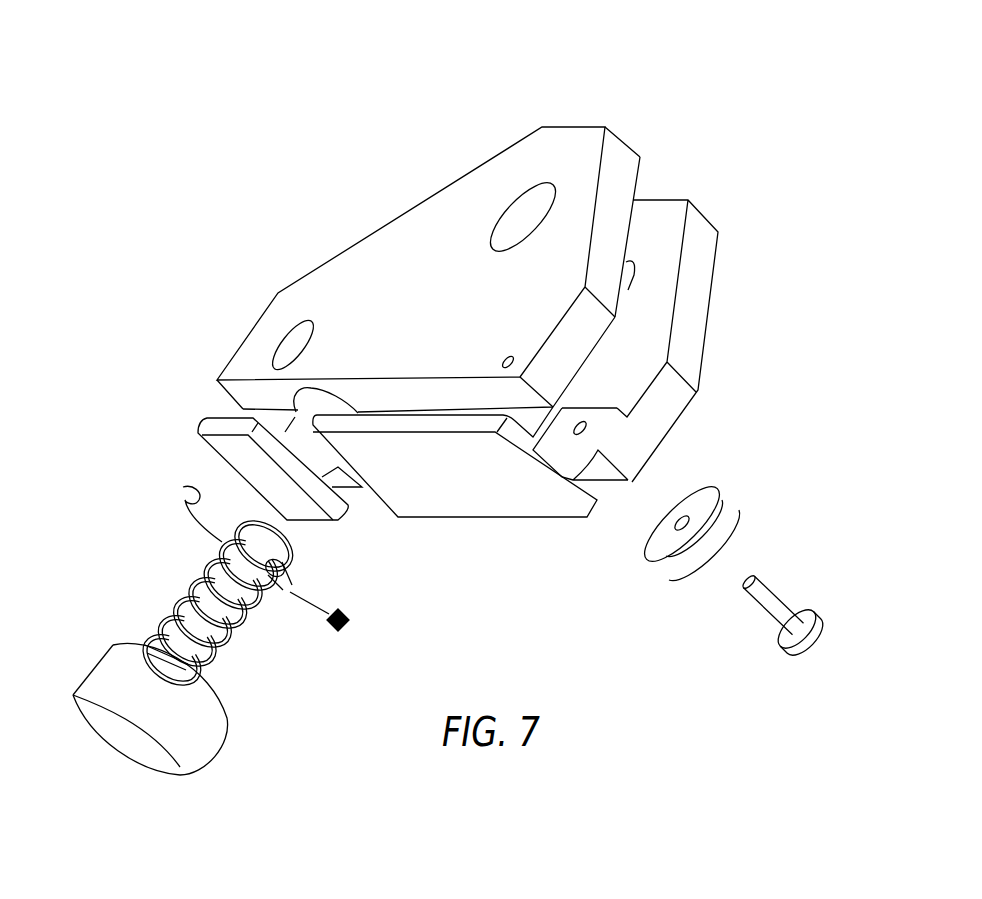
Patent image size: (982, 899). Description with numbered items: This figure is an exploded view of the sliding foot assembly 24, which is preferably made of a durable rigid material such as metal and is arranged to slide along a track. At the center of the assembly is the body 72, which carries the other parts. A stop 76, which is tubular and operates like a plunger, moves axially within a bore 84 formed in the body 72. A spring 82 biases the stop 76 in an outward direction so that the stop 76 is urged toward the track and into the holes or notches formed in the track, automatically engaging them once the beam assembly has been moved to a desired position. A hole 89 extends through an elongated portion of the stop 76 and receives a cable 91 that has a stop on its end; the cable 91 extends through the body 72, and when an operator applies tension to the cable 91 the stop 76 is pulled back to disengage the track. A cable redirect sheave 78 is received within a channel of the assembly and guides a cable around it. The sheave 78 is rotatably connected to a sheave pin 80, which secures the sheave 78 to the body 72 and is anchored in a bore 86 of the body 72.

The sliding foot assembly 24 is at (593, 93).
The body 72 is at (385, 255).
The stop 76 is at (145, 747).
The cable redirect sheave 78 is at (675, 580).
The sheave pin 80 is at (777, 605).
The spring 82 is at (188, 577).
The bore 84 is at (315, 402).
The bore 86 is at (292, 345).
The hole 89 is at (273, 610).
The cable 91 is at (313, 598).